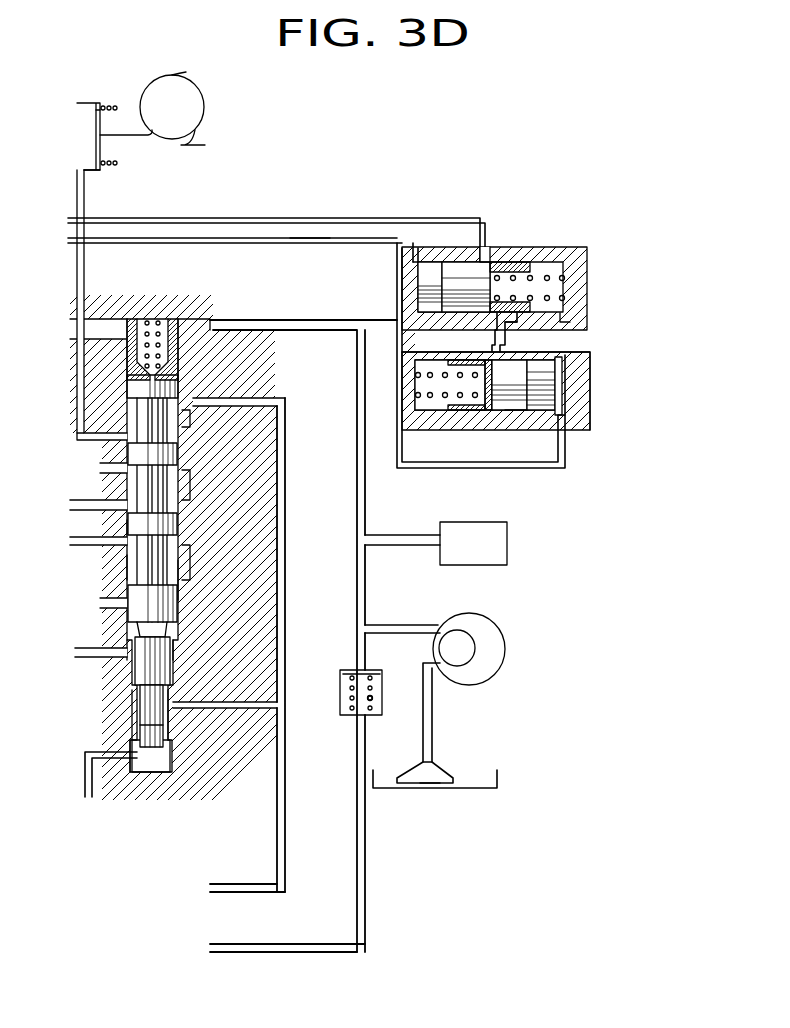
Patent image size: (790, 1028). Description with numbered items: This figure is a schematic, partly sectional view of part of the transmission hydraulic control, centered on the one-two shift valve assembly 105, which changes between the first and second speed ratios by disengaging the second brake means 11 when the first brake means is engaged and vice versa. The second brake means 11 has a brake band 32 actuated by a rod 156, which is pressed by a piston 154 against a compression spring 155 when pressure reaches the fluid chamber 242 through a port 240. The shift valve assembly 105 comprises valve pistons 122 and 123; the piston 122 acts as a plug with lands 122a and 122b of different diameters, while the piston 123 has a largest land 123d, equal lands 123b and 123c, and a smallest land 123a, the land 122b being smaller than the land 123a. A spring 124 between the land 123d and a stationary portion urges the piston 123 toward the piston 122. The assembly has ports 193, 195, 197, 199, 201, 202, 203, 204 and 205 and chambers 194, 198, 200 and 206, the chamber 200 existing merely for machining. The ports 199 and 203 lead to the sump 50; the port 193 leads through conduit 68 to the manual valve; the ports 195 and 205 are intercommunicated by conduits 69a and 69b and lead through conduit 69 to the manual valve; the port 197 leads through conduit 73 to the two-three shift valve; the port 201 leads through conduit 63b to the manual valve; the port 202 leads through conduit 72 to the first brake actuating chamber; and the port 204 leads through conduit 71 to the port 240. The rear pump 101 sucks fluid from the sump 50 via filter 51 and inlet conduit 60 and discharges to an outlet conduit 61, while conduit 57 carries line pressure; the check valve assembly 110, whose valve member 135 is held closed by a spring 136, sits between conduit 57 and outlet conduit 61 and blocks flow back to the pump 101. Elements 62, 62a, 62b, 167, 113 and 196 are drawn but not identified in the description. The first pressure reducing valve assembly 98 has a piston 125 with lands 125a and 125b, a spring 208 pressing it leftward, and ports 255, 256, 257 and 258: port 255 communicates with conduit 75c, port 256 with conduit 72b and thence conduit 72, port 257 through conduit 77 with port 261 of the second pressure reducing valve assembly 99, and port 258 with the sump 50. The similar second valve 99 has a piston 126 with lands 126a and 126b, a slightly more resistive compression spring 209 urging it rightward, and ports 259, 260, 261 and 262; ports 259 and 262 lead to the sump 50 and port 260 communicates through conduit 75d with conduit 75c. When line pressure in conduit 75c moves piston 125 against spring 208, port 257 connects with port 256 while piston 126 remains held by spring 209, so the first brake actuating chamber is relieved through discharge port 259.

The second brake means 11 is at (180, 72).
The brake band 32 is at (205, 100).
The piston 154 is at (96, 108).
The compression spring 155 is at (114, 104).
The rod 156 is at (140, 138).
The fluid chamber 242 is at (82, 128).
The port 240 is at (88, 173).
The conduit 71 is at (86, 258).
The conduit 72b is at (208, 218).
The conduit 75c is at (307, 245).
The conduit 75d is at (472, 468).
The port 255 is at (428, 262).
The land 125a is at (433, 266).
The piston 125 is at (465, 273).
The port 256 is at (488, 250).
The land 125b is at (500, 262).
The first pressure reducing valve assembly 98 is at (572, 236).
The spring 208 is at (562, 272).
The port 258 is at (562, 318).
The port 261 is at (405, 263).
The conduit 77 is at (496, 337).
The port 257 is at (514, 321).
The second pressure reducing valve assembly 99 is at (597, 356).
The land 126a is at (562, 395).
The port 262 is at (564, 405).
The port 260 is at (560, 425).
The compression spring 209 is at (432, 402).
The land 126b is at (503, 388).
The piston 126 is at (520, 393).
The port 259 is at (523, 422).
The 1-2 shift valve assembly 105 is at (214, 302).
The spring 124 is at (165, 312).
The chamber 206 is at (112, 322).
The land 123d is at (180, 386).
The port 205 is at (200, 401).
The port 204 is at (118, 436).
The port 203 is at (106, 468).
The land 123c is at (176, 455).
The conduit 72 is at (88, 504).
The valve piston 123 is at (160, 492).
The port 202 is at (125, 527).
The land 123b is at (176, 528).
The conduit 63b is at (120, 541).
The port 201 is at (118, 560).
The chamber 200 is at (181, 582).
The port 199 is at (110, 603).
The land 123a is at (176, 613).
The port 197 is at (125, 648).
The chamber 198 is at (178, 642).
The conduit 73 is at (76, 655).
The land 122b is at (165, 672).
The port 196 is at (131, 706).
The port 195 is at (176, 705).
The valve piston 122 is at (140, 714).
The land 122a is at (162, 725).
The conduit 68 is at (85, 766).
The port 193 is at (128, 752).
The chamber 194 is at (163, 765).
The conduit 69b is at (286, 487).
The conduit branch 62a is at (398, 535).
The control unit 113 is at (510, 531).
The conduit 62b is at (357, 520).
The conduit 167 is at (367, 548).
The conduit 62 is at (362, 590).
The outlet conduit 61 is at (437, 630).
The rear pump 101 is at (505, 626).
The conduit 69a is at (281, 694).
The valve member 135 is at (372, 672).
The spring 136 is at (372, 700).
The check valve assembly 110 is at (348, 720).
The inlet conduit 60 is at (434, 722).
The filter 51 is at (430, 785).
The sump 50 is at (470, 790).
The conduit 69 is at (283, 836).
The conduit 57 is at (290, 953).